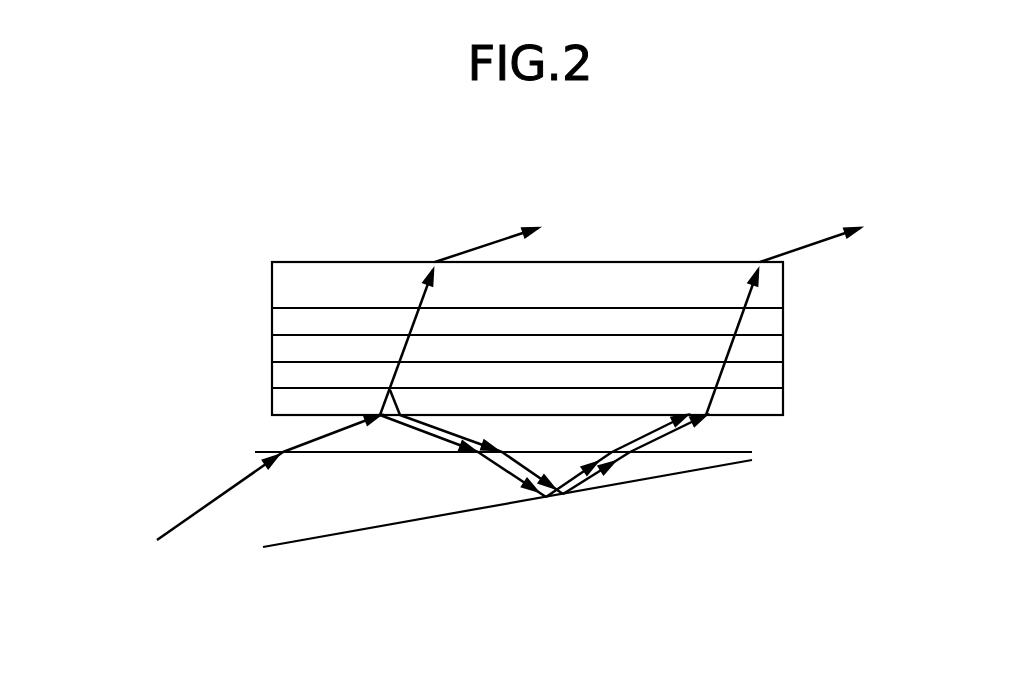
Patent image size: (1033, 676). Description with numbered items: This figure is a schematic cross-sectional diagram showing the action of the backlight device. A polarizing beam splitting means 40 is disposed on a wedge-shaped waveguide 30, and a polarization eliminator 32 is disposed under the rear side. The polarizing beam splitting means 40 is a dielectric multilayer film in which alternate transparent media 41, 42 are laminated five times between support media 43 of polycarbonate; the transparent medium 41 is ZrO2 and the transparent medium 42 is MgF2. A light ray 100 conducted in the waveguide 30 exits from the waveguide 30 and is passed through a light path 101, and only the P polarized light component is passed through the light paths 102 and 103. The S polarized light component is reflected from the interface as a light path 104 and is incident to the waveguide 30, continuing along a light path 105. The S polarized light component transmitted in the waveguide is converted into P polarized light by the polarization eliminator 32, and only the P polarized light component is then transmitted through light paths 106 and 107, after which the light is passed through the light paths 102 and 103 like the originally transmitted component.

The wedge-shaped waveguide 30 is at (300, 525).
The polarization eliminator 32 is at (750, 470).
The polarizing beam splitting means 40 is at (817, 255).
The transparent medium 41 is at (287, 350).
The transparent medium 42 is at (287, 321).
The support medium 43 is at (287, 283).
The light ray 100 is at (205, 505).
The light path 101 is at (300, 440).
The light path 102 is at (393, 325).
The light path 103 is at (455, 250).
The light path 104 is at (415, 425).
The refracted reflected light 105 is at (487, 455).
The light path 106 is at (568, 482).
The light path 107 is at (640, 437).